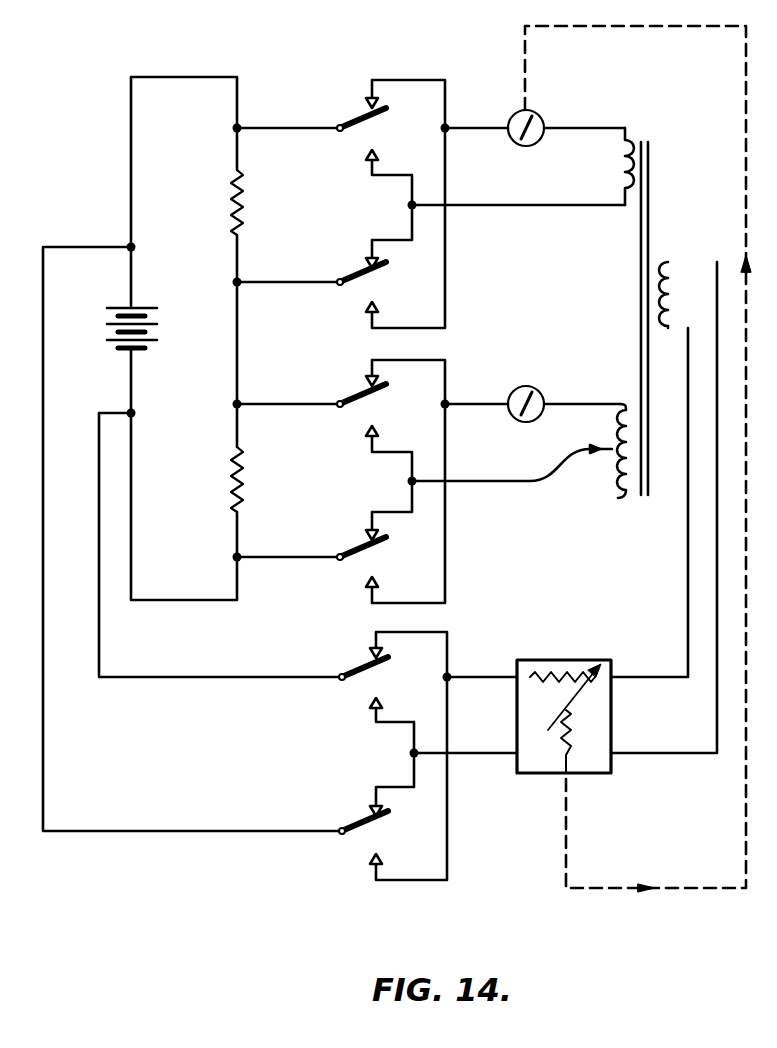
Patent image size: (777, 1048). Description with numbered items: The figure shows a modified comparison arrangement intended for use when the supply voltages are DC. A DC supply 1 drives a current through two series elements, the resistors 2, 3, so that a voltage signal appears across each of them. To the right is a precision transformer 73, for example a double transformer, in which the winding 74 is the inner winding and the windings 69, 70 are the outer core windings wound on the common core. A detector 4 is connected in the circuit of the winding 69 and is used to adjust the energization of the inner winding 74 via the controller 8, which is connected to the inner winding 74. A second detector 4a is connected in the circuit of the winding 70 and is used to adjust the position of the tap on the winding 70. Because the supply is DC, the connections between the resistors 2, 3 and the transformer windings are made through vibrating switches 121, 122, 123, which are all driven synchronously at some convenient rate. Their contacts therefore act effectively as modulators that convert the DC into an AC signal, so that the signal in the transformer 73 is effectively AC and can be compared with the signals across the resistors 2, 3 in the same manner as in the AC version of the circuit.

The DC supply 1 is at (157, 332).
The resistor 2 is at (232, 205).
The resistor 3 is at (232, 487).
The detector 4 is at (543, 116).
The detector 4a is at (556, 378).
The controller 8 is at (590, 661).
The outer core winding 69 is at (622, 168).
The outer core winding 70 is at (628, 406).
The transformer 73 is at (648, 500).
The inner winding 74 is at (672, 282).
The vibrating switch 121 is at (386, 204).
The vibrating switch 122 is at (386, 481).
The vibrating switch 123 is at (387, 756).